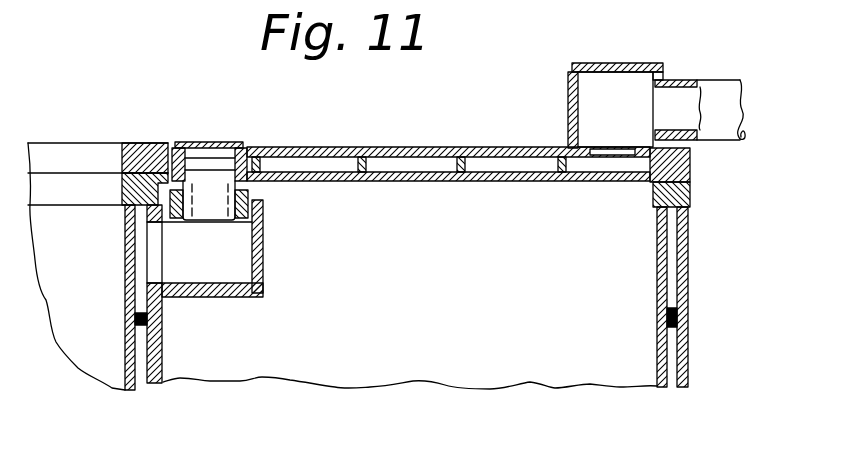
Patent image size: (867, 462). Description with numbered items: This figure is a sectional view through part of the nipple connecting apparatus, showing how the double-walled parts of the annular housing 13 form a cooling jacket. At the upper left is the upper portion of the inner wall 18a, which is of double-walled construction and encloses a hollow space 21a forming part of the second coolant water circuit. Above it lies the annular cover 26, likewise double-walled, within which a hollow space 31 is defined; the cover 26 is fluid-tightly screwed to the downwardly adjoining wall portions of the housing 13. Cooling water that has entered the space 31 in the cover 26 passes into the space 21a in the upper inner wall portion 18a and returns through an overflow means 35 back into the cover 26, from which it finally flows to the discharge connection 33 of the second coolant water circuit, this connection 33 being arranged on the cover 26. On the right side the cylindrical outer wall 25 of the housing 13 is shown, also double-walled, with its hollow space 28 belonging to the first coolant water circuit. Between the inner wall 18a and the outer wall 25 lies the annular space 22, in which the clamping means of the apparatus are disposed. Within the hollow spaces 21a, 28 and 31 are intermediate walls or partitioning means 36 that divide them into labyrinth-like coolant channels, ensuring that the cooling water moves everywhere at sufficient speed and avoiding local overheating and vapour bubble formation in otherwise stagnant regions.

The annular housing 13 is at (95, 134).
The hollow space 21a is at (130, 256).
The upper portion of the inner wall 18a is at (163, 352).
The overflow means 35 is at (265, 265).
The annular cover 26 is at (304, 147).
The hollow space 31 is at (430, 162).
The intermediate walls or partitioning means 36 is at (362, 165).
The discharge connection 33 is at (722, 93).
The hollow space 28 is at (667, 247).
The cylindrical outer wall 25 is at (690, 297).
The annular space 22 is at (447, 303).